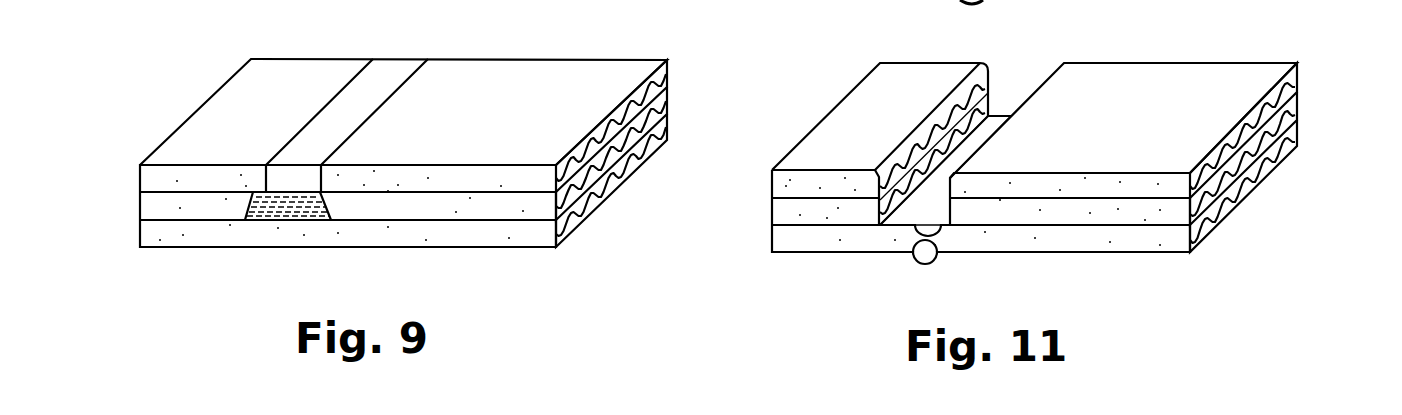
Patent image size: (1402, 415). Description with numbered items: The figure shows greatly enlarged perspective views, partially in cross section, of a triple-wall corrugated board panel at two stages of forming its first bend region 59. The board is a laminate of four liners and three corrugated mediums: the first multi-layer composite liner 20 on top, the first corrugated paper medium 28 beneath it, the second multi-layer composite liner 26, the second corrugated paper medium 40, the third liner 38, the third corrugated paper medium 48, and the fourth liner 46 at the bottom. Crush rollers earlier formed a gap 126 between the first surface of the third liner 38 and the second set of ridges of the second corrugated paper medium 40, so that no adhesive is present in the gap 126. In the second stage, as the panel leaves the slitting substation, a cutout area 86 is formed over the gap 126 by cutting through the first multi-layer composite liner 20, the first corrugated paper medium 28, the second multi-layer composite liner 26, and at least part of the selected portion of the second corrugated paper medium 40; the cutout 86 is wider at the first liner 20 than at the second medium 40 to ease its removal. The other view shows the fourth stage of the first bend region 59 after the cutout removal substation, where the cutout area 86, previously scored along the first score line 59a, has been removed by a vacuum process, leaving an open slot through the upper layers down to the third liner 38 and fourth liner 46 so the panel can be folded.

In FIG. 9, the first multi-layer composite liner 20 is at (489, 130).
In FIG. 11, the first multi-layer composite liner 20 is at (1140, 137).
In FIG. 9, the second multi-layer composite liner 26 is at (140, 192).
In FIG. 11, the second multi-layer composite liner 26 is at (772, 198).
In FIG. 9, the first corrugated paper medium 28 is at (667, 74).
In FIG. 11, the first corrugated paper medium 28 is at (1297, 77).
In FIG. 9, the third liner 38 is at (140, 219).
In FIG. 11, the third liner 38 is at (772, 226).
In FIG. 9, the second corrugated paper medium 40 is at (667, 103).
In FIG. 11, the second corrugated paper medium 40 is at (1297, 110).
In FIG. 9, the fourth liner 46 is at (140, 244).
In FIG. 11, the fourth liner 46 is at (772, 252).
In FIG. 9, the third corrugated paper medium 48 is at (668, 133).
In FIG. 11, the third corrugated paper medium 48 is at (1297, 134).
In FIG. 9, the cutout area 86 is at (386, 76).
In FIG. 9, the gap 126 is at (293, 213).
In FIG. 11, the gap 126 is at (897, 223).
In FIG. 11, the first bend region 59 is at (1005, 107).
In FIG. 11, the first score line 59a is at (925, 253).